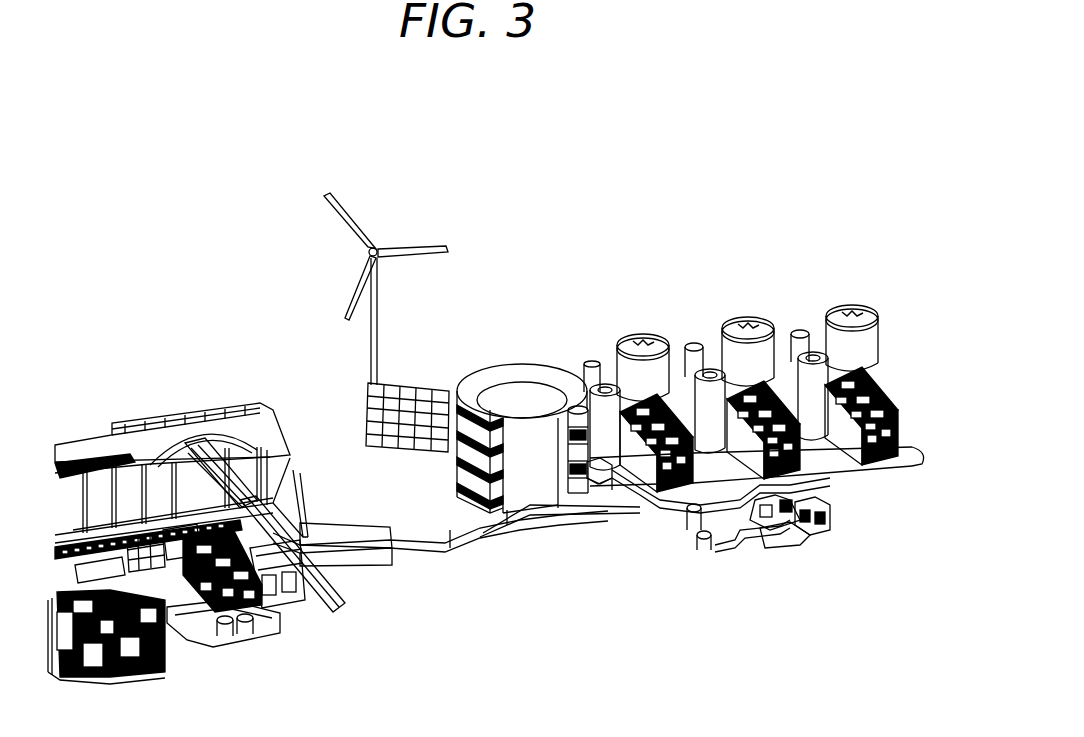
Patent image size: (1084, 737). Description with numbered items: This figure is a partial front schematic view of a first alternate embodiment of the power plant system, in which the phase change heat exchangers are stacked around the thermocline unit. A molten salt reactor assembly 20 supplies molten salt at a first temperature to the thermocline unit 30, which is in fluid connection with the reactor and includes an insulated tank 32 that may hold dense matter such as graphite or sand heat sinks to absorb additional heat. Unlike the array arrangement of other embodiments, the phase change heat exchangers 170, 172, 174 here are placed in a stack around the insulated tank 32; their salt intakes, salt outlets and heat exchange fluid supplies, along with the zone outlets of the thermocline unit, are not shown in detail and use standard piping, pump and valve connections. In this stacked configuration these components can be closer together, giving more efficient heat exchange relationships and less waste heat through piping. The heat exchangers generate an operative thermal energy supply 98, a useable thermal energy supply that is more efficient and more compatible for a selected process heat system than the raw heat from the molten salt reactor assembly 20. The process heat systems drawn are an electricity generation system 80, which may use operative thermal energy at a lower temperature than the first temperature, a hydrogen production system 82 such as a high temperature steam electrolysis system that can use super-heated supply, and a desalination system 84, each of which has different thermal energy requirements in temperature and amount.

The molten salt reactor assembly 20 is at (218, 408).
The thermocline unit 30 is at (528, 385).
The insulated tank 32 is at (510, 400).
The hydrogen production system 82 is at (635, 333).
The desalination system 84 is at (752, 318).
The phase change heat exchanger 170 is at (576, 412).
The phase change heat exchanger 172 is at (581, 432).
The phase change heat exchanger 174 is at (592, 455).
The operative thermal energy supply 98 is at (618, 472).
The electricity generation system 80 is at (785, 522).